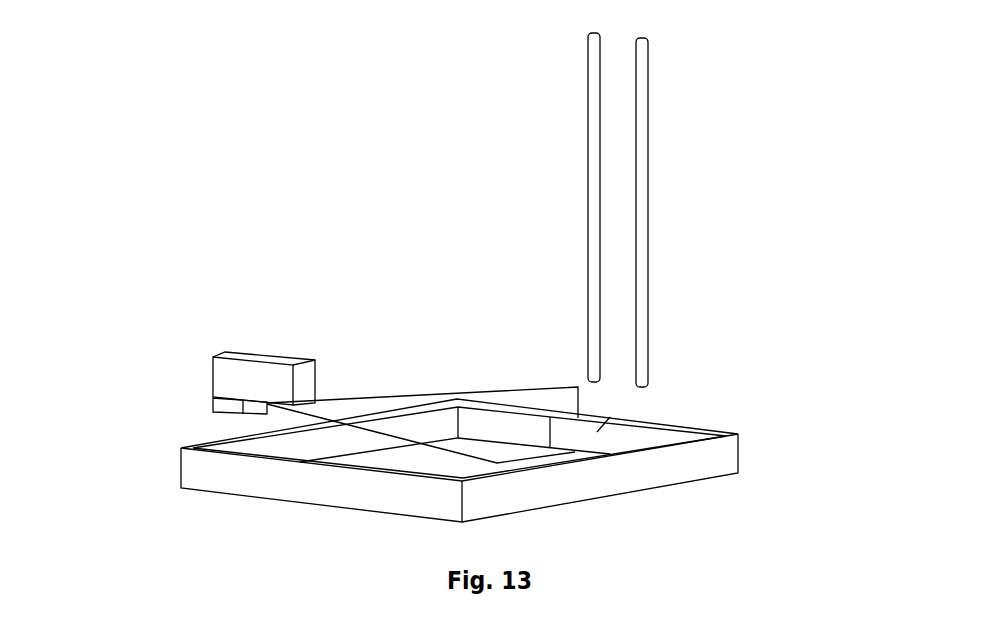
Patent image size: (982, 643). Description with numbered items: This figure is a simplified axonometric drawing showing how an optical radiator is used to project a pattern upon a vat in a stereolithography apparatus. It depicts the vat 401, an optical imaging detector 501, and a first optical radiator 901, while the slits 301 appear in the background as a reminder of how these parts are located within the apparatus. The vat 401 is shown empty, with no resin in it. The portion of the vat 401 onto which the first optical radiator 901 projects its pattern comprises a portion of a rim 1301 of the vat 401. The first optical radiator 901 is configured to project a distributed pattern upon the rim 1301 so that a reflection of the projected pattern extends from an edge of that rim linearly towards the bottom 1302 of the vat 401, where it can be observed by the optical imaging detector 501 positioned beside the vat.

The slits 301 is at (588, 186).
The optical imaging detector 501 is at (222, 370).
The first optical radiator 901 is at (213, 405).
The vat 401 is at (740, 443).
The rim 1301 is at (575, 452).
The bottom 1302 is at (555, 422).